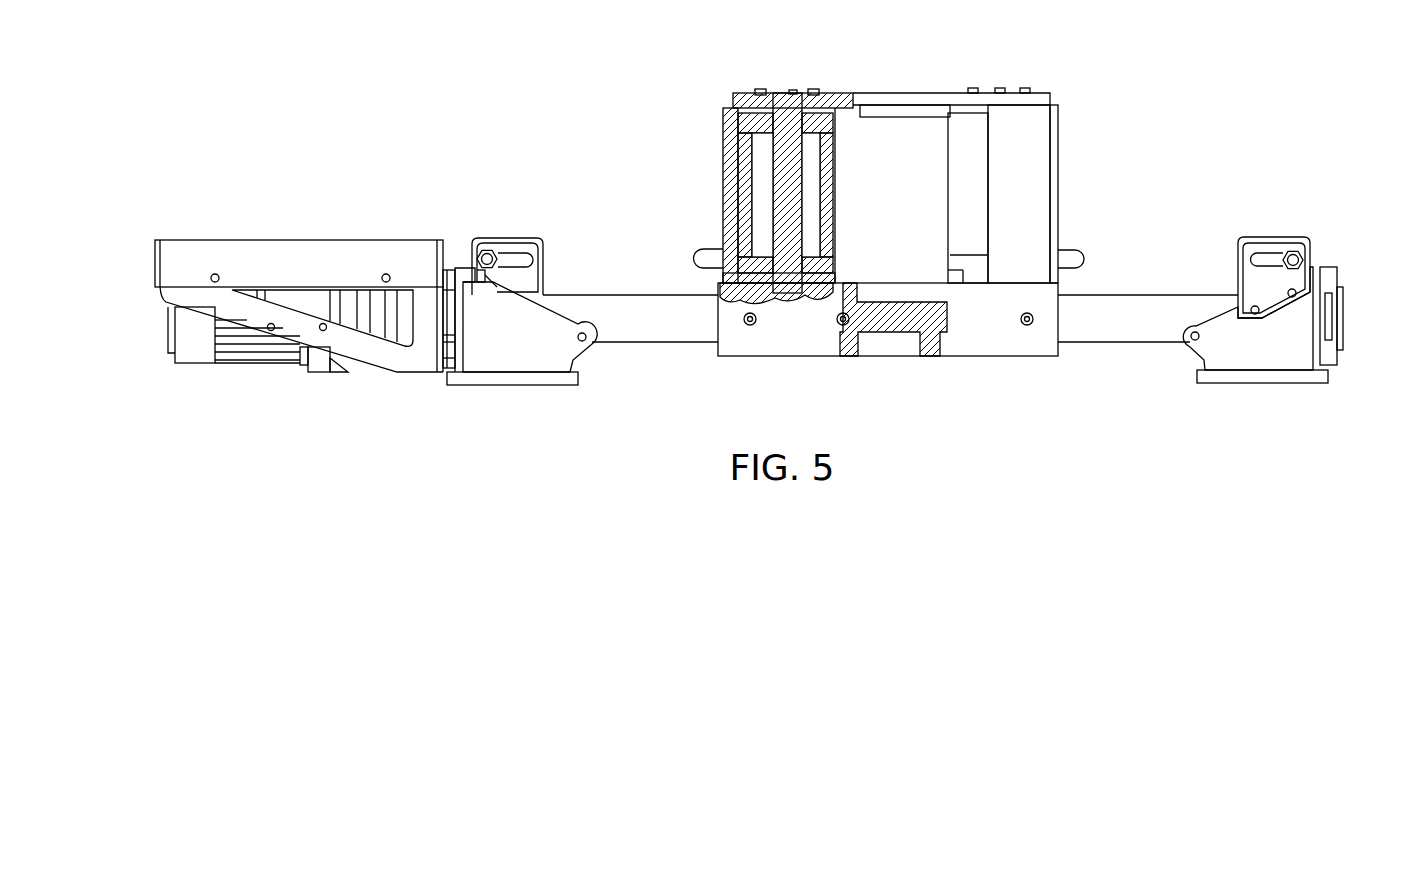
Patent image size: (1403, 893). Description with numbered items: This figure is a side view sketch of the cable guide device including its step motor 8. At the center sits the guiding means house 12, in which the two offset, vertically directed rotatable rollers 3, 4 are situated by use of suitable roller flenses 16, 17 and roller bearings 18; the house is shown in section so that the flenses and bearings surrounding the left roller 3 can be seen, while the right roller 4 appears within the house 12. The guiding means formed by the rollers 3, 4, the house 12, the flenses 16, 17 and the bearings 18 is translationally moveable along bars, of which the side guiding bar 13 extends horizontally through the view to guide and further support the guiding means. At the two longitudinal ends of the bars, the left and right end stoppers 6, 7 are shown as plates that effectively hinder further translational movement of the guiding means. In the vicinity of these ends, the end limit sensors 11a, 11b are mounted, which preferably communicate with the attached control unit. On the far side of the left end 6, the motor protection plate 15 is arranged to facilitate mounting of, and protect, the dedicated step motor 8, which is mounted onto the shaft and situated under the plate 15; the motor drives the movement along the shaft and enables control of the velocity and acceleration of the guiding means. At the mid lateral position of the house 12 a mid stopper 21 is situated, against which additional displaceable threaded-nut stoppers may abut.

The left rotatable roller 3 is at (833, 197).
The right rotatable roller 4 is at (948, 170).
The left end stopper 6 is at (463, 267).
The right end stopper 7 is at (1323, 268).
The step motor 8 is at (198, 364).
The end limit sensor 11a is at (496, 252).
The end limit sensor 11b is at (1300, 255).
The guiding means house 12 is at (1058, 135).
The side guiding bar 13 is at (613, 293).
The motor protection plate 15 is at (272, 240).
The roller flens 16 is at (797, 93).
The roller flens 17 is at (1002, 88).
The roller bearings 18 is at (750, 130).
The mid stopper 21 is at (900, 347).